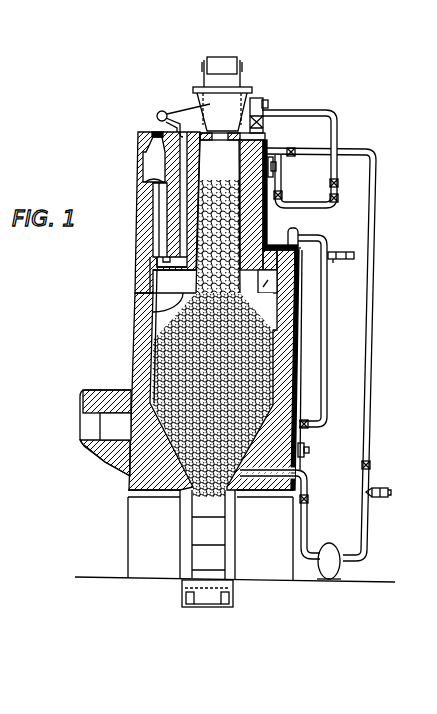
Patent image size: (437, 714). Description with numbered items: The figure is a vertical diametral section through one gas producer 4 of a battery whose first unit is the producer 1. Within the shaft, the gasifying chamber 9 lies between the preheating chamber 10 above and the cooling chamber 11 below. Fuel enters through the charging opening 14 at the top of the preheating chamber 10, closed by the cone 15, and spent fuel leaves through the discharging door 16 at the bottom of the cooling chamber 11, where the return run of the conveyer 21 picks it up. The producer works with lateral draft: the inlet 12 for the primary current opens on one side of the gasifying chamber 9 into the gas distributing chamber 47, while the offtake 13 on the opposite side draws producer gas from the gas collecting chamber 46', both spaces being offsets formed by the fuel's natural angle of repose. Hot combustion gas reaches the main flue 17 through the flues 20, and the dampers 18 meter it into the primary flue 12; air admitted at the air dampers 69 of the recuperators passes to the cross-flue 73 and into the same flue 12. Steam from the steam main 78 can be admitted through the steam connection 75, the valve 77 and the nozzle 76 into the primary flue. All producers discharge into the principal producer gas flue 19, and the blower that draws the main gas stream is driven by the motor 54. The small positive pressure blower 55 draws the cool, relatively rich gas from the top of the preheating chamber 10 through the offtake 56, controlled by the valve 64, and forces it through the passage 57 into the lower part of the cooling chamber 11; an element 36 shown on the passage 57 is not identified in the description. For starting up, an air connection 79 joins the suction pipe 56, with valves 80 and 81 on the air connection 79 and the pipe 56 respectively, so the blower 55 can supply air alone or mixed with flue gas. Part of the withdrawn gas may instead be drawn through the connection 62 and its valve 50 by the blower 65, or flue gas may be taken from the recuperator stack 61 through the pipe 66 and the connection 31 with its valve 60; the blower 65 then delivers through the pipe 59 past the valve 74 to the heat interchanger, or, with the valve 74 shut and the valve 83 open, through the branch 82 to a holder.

The gas producer 1 is at (244, 143).
The gas producer 4 is at (297, 353).
The gasifying chamber 9 is at (212, 390).
The preheating chamber 10 is at (218, 216).
The cooling chamber 11 is at (211, 412).
The inlet for the primary current 12 is at (159, 199).
The offtake for the producer gas 13 is at (277, 281).
The charging opening 14 is at (263, 125).
The cone 15 is at (228, 150).
The discharging door 16 is at (210, 533).
The main flue 17 is at (155, 168).
The damper 18 is at (143, 184).
The principal producer gas flue 19 is at (105, 433).
The flue 20 is at (143, 161).
The conveyer 21 is at (166, 532).
The connection 31 is at (326, 210).
The valve 36 is at (308, 499).
The gas collecting chamber 46' is at (281, 311).
The gas distributing chamber 47 is at (162, 312).
The valve 50 is at (282, 196).
The motor 54 is at (309, 451).
The positive pressure blower 55 is at (329, 561).
The offtake 56 is at (371, 154).
The passage 57 is at (307, 527).
The pipe 59 is at (305, 243).
The valve 60 is at (338, 198).
The recuperator stack 61 is at (268, 104).
The connection 62 is at (282, 164).
The valve 64 is at (295, 150).
The blower 65 is at (295, 233).
The pipe 66 is at (306, 113).
The air damper 69 is at (276, 168).
The cross-flue 73 is at (157, 281).
The valve 74 is at (305, 420).
The steam connection 75 is at (205, 134).
The nozzle 76 is at (160, 265).
The valve 77 is at (183, 135).
The steam main 78 is at (157, 117).
The air connection 79 is at (388, 497).
The valve 80 is at (384, 489).
The valve 81 is at (362, 466).
The branch 82 is at (348, 252).
The valve 83 is at (334, 262).